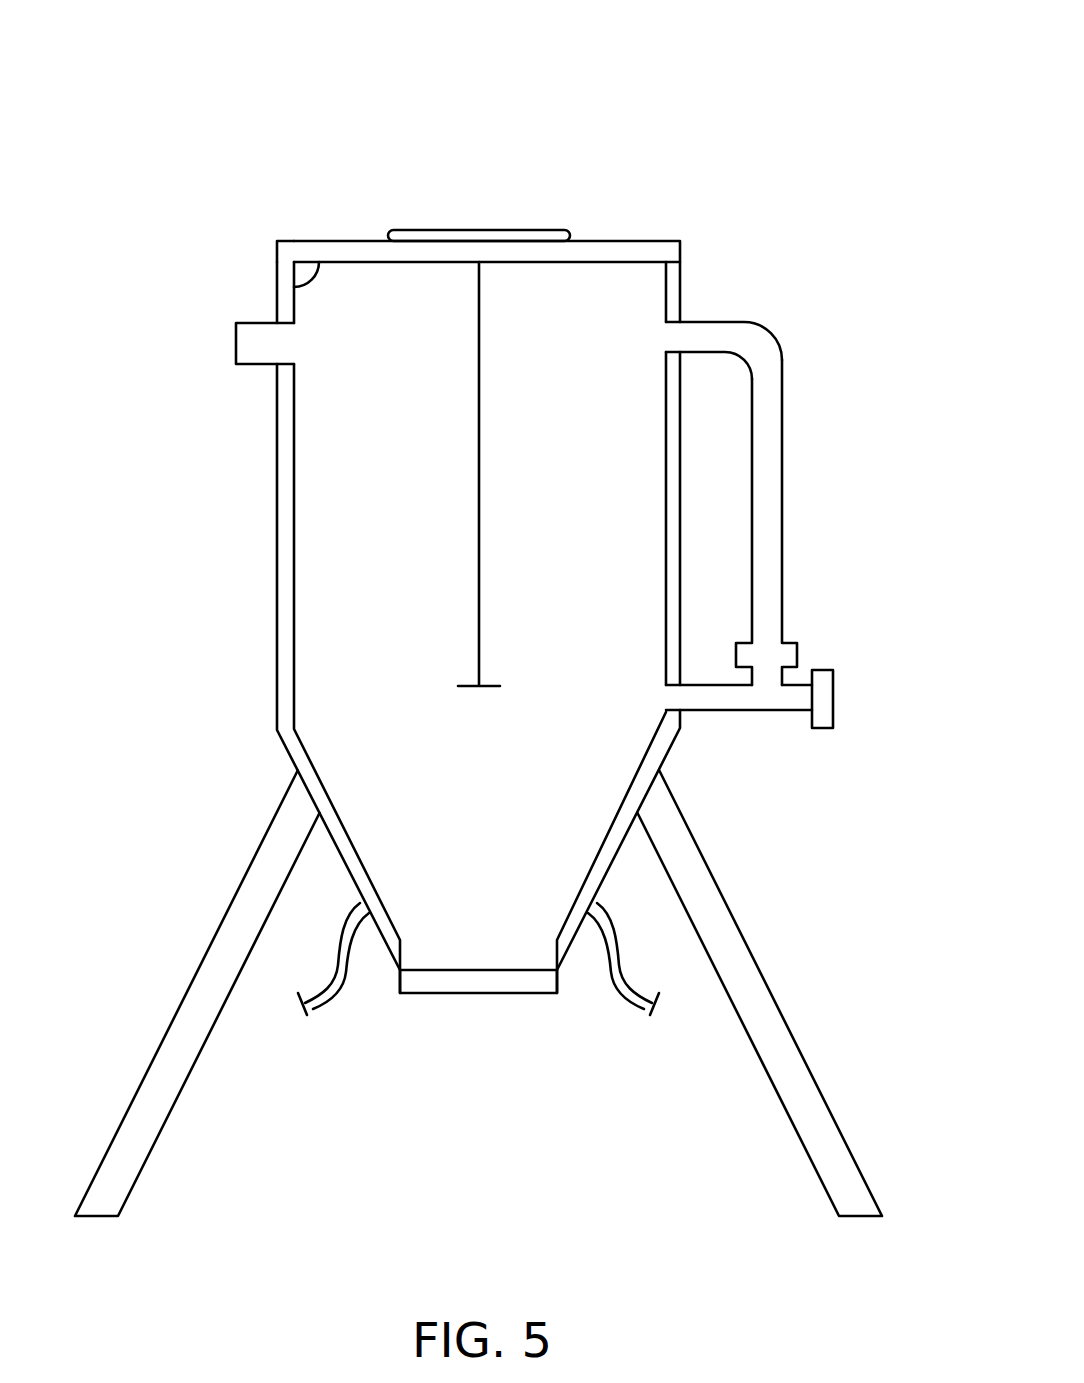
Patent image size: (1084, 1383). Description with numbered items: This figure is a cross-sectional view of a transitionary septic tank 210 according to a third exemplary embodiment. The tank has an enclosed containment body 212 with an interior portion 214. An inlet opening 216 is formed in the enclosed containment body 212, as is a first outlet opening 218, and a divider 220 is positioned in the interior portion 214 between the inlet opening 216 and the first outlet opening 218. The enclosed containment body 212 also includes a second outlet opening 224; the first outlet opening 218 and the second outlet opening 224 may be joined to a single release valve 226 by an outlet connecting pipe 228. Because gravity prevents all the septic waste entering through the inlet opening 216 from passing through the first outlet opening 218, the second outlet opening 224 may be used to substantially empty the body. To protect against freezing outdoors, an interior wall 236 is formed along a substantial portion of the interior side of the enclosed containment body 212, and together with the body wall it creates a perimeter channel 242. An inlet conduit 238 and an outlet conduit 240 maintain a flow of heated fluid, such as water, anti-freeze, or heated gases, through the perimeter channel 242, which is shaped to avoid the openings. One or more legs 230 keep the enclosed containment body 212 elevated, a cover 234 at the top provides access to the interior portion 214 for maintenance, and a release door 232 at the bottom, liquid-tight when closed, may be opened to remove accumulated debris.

The transitionary septic tank 210 is at (770, 71).
The enclosed containment body 212 is at (681, 243).
The interior portion 214 is at (337, 588).
The inlet opening 216 is at (258, 322).
The first outlet opening 218 is at (682, 321).
The divider 220 is at (480, 311).
The second outlet opening 224 is at (700, 713).
The release valve 226 is at (834, 695).
The outlet connecting pipe 228 is at (783, 473).
The legs 230 is at (195, 973).
The release door 232 is at (497, 994).
The cover 234 is at (478, 230).
The interior wall 236 is at (316, 268).
The inlet conduit 238 is at (335, 1000).
The outlet conduit 240 is at (622, 1000).
The perimeter channel 242 is at (287, 250).